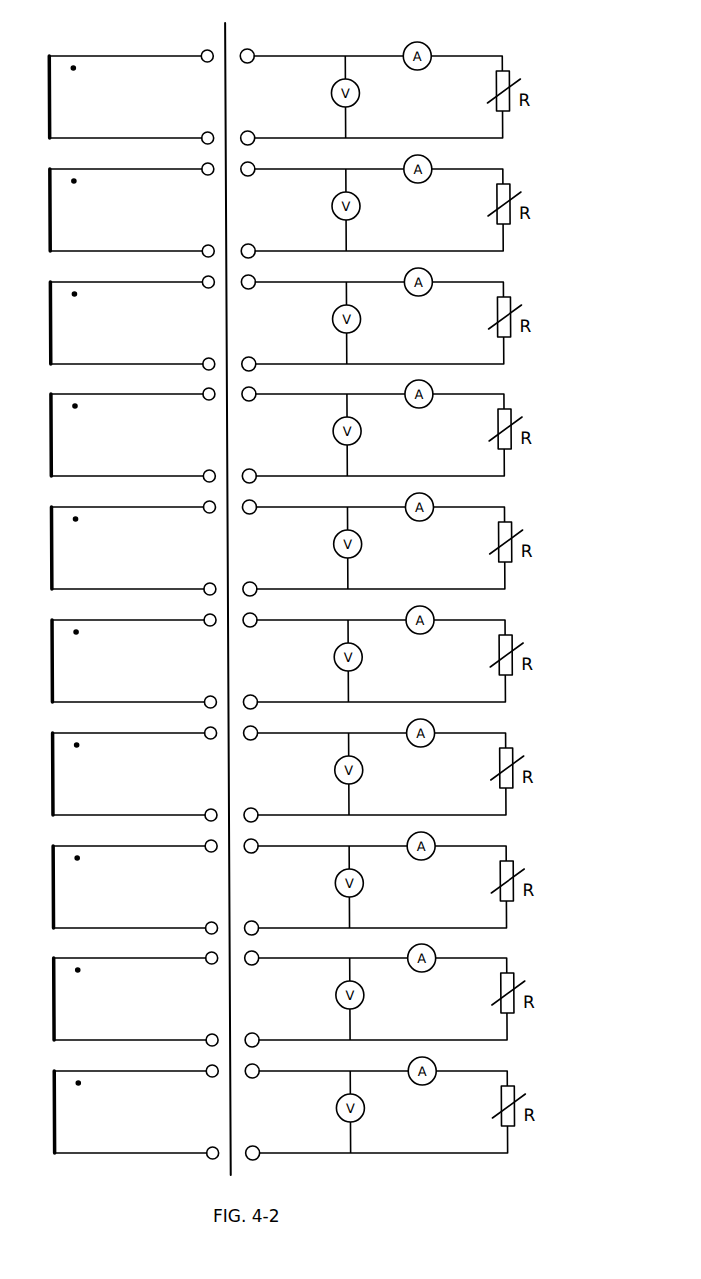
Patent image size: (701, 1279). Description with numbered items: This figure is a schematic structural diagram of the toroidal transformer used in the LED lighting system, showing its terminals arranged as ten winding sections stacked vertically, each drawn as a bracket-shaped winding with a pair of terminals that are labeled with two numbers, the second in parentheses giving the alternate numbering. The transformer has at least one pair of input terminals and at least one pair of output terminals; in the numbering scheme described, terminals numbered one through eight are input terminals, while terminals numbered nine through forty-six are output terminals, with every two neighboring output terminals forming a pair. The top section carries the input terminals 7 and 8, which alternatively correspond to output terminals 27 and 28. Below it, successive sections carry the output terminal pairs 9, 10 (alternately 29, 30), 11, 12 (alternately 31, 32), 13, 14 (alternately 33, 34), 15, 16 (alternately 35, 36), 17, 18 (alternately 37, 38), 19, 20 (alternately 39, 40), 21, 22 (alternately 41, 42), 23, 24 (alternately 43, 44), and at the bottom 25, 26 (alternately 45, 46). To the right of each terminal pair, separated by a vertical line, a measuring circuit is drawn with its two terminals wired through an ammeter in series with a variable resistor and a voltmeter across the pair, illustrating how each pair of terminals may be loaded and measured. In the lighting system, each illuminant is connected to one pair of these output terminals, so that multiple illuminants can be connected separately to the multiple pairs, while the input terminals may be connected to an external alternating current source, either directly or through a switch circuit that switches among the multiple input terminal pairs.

The input terminal 7 is at (131, 47).
The output terminal 27 is at (131, 47).
The input terminal 8 is at (132, 130).
The output terminal 28 is at (132, 130).
The output terminal 9 is at (132, 160).
The output terminal 29 is at (132, 160).
The output terminal 10 is at (132, 243).
The output terminal 30 is at (132, 243).
The output terminal 11 is at (132, 273).
The output terminal 31 is at (132, 273).
The output terminal 12 is at (133, 356).
The output terminal 32 is at (133, 356).
The output terminal 13 is at (133, 385).
The output terminal 33 is at (133, 385).
The output terminal 14 is at (133, 468).
The output terminal 34 is at (133, 468).
The output terminal 15 is at (133, 498).
The output terminal 35 is at (133, 498).
The output terminal 16 is at (134, 581).
The output terminal 36 is at (134, 581).
The output terminal 17 is at (134, 611).
The output terminal 37 is at (134, 611).
The output terminal 18 is at (134, 694).
The output terminal 38 is at (134, 694).
The output terminal 19 is at (134, 724).
The output terminal 39 is at (134, 724).
The output terminal 20 is at (135, 807).
The output terminal 40 is at (135, 807).
The output terminal 21 is at (135, 837).
The output terminal 41 is at (135, 837).
The output terminal 22 is at (135, 920).
The output terminal 42 is at (135, 920).
The output terminal 23 is at (136, 949).
The output terminal 43 is at (136, 949).
The output terminal 24 is at (136, 1032).
The output terminal 44 is at (136, 1032).
The output terminal 25 is at (136, 1062).
The output terminal 45 is at (136, 1062).
The output terminal 26 is at (137, 1145).
The output terminal 46 is at (137, 1145).